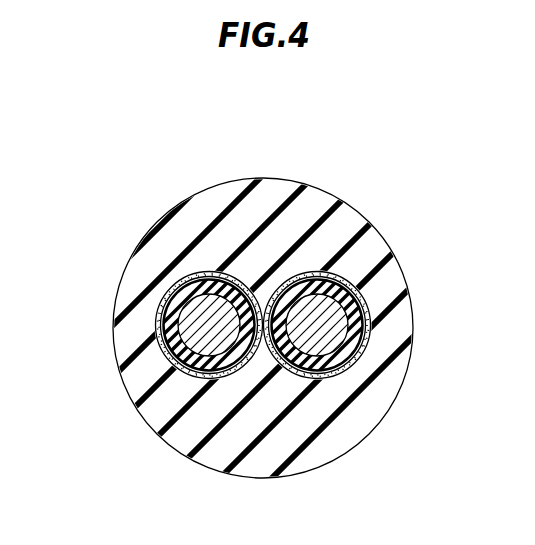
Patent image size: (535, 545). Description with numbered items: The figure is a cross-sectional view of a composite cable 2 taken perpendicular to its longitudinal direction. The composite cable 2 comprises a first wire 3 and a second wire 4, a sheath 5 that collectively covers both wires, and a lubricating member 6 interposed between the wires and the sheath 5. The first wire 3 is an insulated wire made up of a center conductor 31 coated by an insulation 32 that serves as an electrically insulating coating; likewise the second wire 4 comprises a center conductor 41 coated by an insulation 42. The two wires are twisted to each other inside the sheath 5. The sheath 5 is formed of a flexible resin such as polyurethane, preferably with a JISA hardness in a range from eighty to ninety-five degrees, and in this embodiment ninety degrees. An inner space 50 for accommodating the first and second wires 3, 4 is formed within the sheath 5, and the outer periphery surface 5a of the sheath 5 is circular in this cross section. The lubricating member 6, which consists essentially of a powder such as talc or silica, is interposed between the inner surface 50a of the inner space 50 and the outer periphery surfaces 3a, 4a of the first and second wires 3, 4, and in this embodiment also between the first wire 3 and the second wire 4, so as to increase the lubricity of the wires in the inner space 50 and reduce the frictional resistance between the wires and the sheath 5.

The composite cable 2 is at (161, 167).
The first wire 3 is at (169, 301).
The outer periphery surface of first wire 3a is at (190, 300).
The center conductor 31 is at (187, 328).
The insulation 32 is at (172, 312).
The second wire 4 is at (357, 300).
The outer periphery surface of second wire 4a is at (343, 297).
The center conductor 41 is at (335, 330).
The insulation 42 is at (353, 307).
The sheath 5 is at (267, 336).
The outer periphery surface of sheath 5a is at (181, 452).
The inner space 50 is at (167, 390).
The inner surface of inner space 50a is at (350, 373).
The lubricating member 6 is at (163, 357).